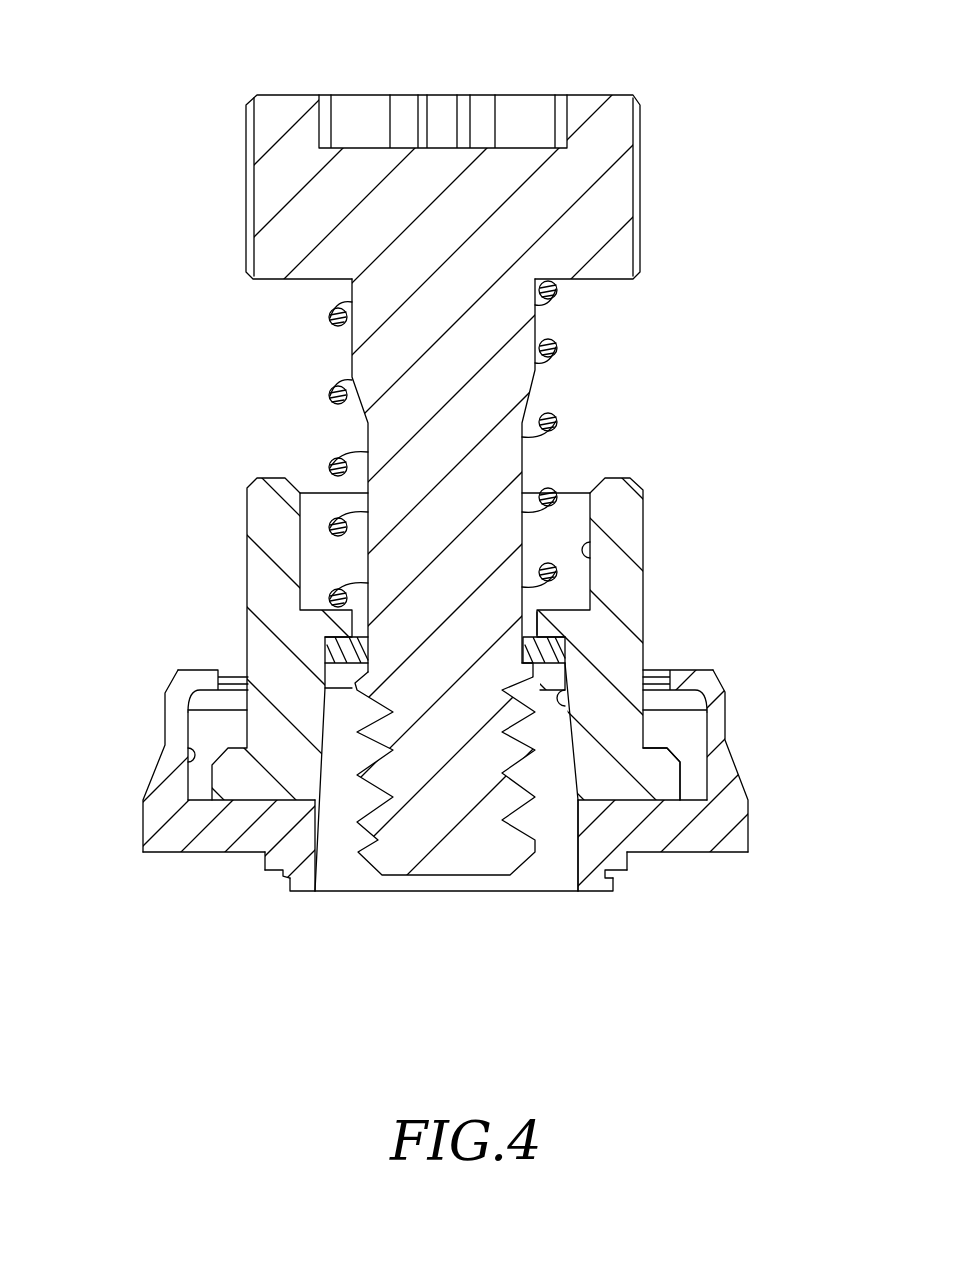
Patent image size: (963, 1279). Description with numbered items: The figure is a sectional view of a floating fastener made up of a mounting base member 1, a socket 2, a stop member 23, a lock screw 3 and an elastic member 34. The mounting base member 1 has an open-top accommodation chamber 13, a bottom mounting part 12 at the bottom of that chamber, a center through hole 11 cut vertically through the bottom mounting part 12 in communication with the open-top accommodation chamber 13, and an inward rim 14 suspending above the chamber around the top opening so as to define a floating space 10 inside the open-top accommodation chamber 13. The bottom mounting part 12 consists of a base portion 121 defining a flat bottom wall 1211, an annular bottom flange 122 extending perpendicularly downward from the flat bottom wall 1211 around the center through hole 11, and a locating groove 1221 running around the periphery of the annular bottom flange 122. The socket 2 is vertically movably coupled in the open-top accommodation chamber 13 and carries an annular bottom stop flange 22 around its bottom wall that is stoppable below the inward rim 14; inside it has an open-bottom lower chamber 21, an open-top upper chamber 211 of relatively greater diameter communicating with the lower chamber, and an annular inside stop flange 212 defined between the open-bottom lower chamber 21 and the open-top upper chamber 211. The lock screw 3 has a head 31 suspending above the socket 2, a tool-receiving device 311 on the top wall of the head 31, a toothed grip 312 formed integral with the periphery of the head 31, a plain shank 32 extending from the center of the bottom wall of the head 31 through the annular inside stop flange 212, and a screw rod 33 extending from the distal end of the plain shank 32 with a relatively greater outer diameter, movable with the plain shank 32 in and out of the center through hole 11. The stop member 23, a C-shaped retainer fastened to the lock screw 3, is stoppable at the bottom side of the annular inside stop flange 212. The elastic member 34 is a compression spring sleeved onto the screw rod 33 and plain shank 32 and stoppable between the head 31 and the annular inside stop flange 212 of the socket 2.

The mounting base member 1 is at (478, 830).
The floating space 10 is at (220, 734).
The center through hole 11 is at (315, 893).
The bottom mounting part 12 is at (410, 908).
The base portion 121 is at (163, 840).
The flat bottom wall 1211 is at (192, 855).
The annular bottom flange 122 is at (292, 893).
The locating groove 1221 is at (288, 874).
The open-top accommodation chamber 13 is at (186, 755).
The inward rim 14 is at (200, 677).
The socket 2 is at (477, 680).
The open-bottom lower chamber 21 is at (560, 690).
The open-top upper chamber 211 is at (592, 552).
The annular inside stop flange 212 is at (545, 630).
The annular bottom stop flange 22 is at (668, 785).
The stop member 23 is at (340, 650).
The lock screw 3 is at (481, 478).
The head 31 is at (477, 187).
The tool-receiving device 311 is at (548, 130).
The toothed grip 312 is at (638, 168).
The plain shank 32 is at (382, 445).
The screw rod 33 is at (433, 812).
The elastic member 34 is at (329, 393).